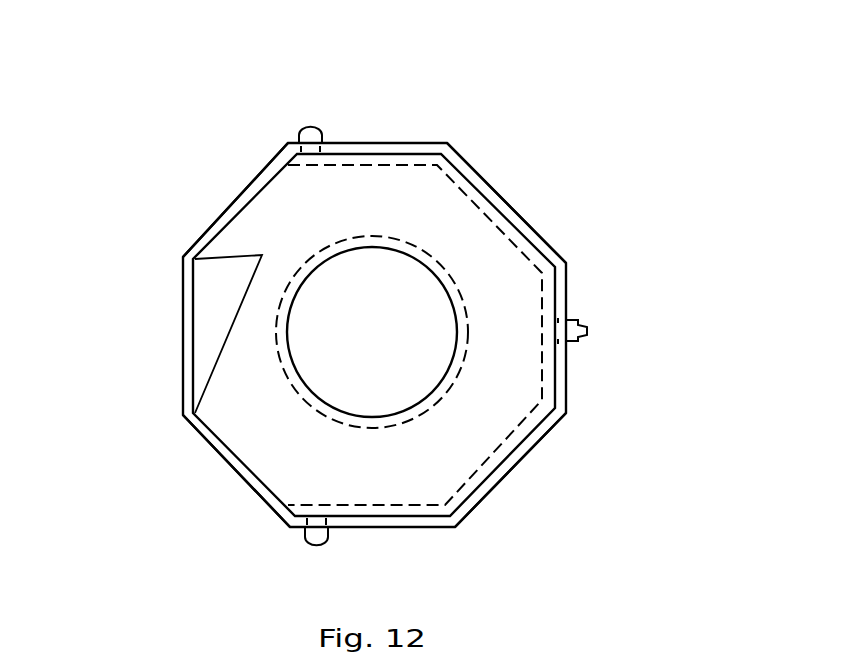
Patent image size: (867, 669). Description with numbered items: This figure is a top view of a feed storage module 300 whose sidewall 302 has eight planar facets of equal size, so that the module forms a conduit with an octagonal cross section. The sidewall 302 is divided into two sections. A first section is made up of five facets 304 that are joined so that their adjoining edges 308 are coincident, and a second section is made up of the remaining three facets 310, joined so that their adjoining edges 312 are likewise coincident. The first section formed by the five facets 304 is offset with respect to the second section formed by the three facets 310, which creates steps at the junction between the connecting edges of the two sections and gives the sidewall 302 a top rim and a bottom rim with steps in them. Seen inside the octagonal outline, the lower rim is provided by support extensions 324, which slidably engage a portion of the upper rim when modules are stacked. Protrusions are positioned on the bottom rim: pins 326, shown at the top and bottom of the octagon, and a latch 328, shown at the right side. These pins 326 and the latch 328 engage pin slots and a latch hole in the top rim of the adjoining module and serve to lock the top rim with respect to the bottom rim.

The feed storage module 300 is at (175, 171).
The sidewall 302 is at (601, 303).
The facets 304 is at (375, 141).
The adjoining edges 308 is at (443, 136).
The facets 310 is at (179, 335).
The adjoining edges 312 is at (252, 326).
The support extensions 324 is at (475, 208).
The pins 326 is at (303, 126).
The latch 328 is at (590, 331).